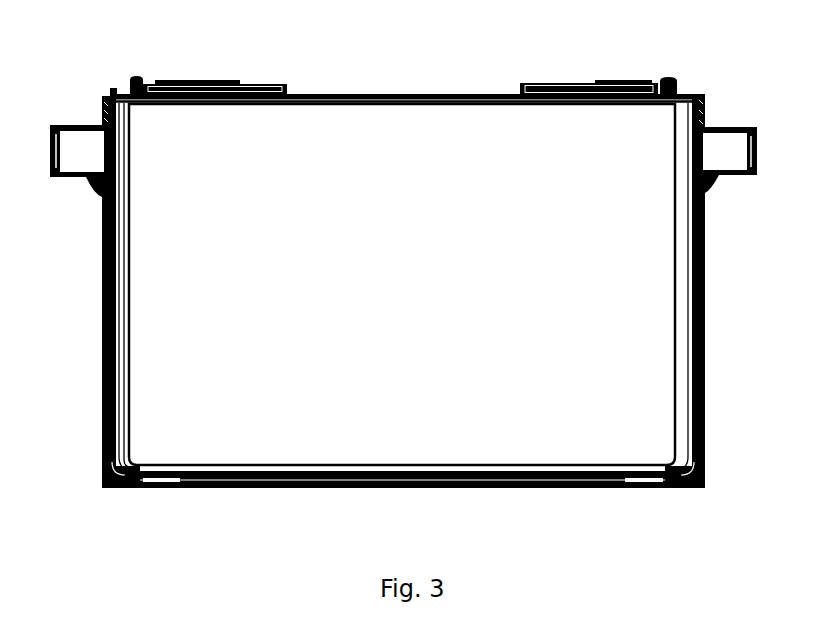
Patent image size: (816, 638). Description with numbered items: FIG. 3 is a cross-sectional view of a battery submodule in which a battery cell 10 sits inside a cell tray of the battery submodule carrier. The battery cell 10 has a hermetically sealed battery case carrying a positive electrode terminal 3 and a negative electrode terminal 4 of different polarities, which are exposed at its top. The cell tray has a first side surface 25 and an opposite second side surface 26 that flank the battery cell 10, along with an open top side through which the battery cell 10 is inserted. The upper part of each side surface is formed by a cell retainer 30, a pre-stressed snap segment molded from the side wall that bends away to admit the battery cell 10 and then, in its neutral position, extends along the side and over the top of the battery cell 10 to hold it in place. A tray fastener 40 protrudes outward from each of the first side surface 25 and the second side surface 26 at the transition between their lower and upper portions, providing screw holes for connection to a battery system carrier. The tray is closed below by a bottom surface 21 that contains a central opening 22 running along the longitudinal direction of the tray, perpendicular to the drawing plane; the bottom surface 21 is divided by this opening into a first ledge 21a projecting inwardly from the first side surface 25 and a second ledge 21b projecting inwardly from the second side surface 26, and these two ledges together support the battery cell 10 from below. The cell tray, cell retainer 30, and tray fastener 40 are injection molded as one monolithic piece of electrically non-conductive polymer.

The positive electrode terminal 3 is at (215, 58).
The negative electrode terminal 4 is at (589, 56).
The battery cell 10 is at (402, 287).
The bottom surface 21 is at (403, 518).
The first ledge 21a is at (700, 509).
The second ledge 21b is at (118, 511).
The central opening 22 is at (403, 513).
The first side surface 25 is at (726, 291).
The second side surface 26 is at (81, 292).
The cell retainer 30 is at (426, 76).
The tray fastener 40 is at (406, 185).